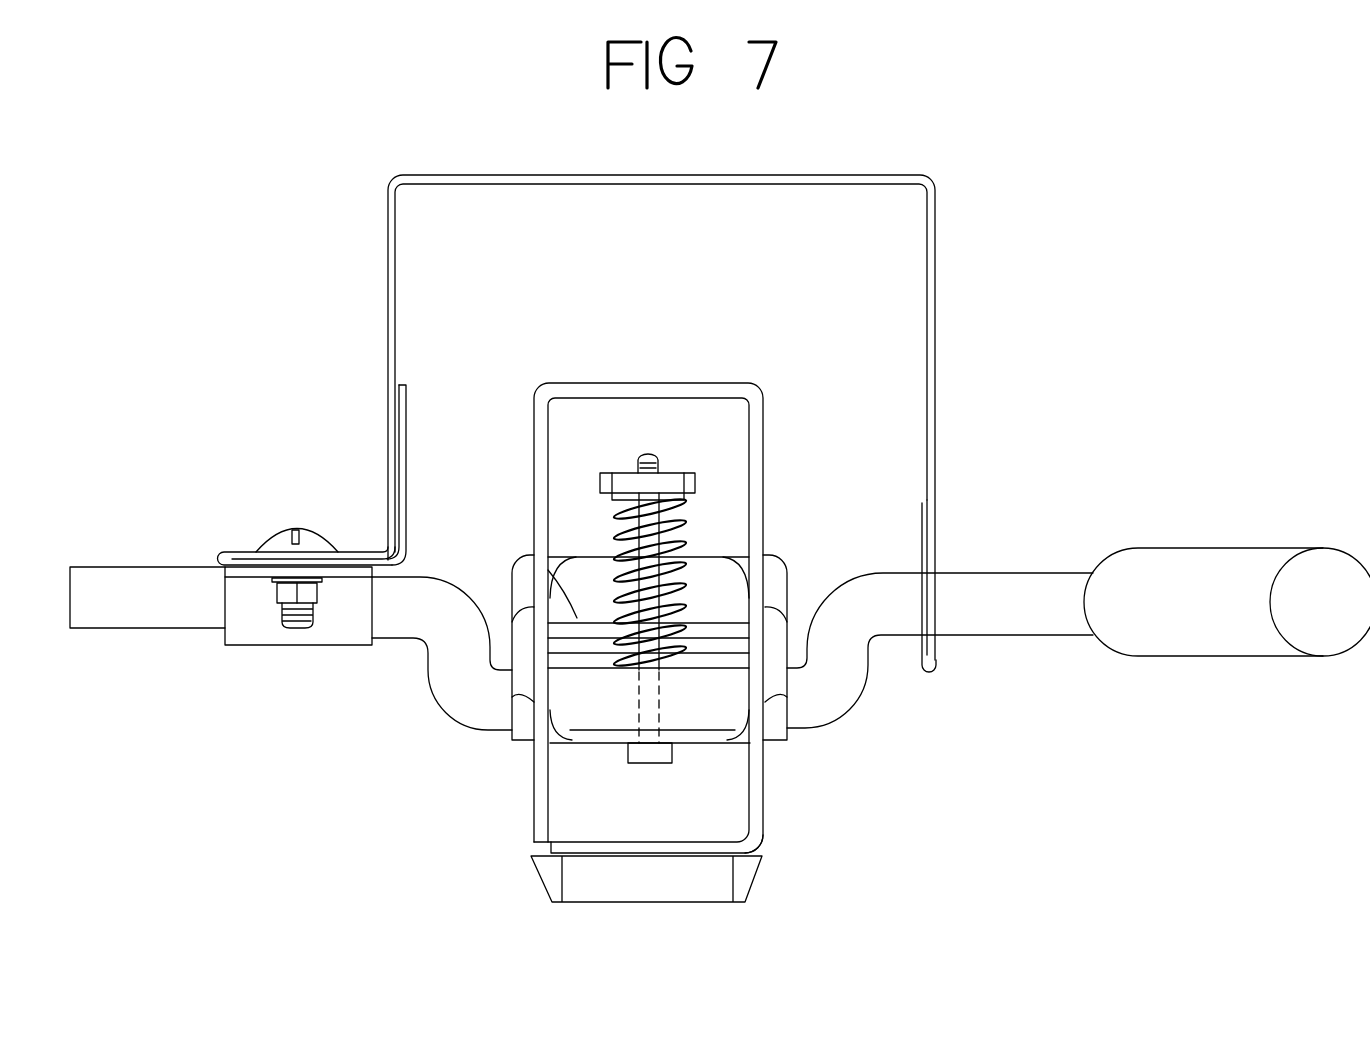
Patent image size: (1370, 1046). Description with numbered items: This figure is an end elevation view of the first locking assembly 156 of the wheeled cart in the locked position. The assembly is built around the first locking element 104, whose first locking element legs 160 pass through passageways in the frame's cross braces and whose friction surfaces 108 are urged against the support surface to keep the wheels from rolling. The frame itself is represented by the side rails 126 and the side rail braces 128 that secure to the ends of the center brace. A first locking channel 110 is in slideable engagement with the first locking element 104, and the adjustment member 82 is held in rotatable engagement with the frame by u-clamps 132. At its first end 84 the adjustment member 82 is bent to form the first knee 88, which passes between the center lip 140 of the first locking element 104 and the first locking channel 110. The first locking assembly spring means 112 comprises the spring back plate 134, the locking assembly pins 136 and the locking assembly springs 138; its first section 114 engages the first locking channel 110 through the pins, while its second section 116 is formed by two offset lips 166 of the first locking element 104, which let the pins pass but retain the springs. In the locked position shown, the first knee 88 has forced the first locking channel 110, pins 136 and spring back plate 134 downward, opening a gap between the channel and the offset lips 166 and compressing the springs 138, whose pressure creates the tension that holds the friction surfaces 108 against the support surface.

The adjustment member 82 is at (1213, 545).
The first end 84 is at (953, 767).
The first knee 88 is at (867, 690).
The first locking element 104 is at (675, 177).
The friction surfaces 108 is at (598, 897).
The first locking channel 110 is at (765, 557).
The first locking assembly spring means 112 is at (632, 318).
The first section of the first locking assembly spring means 114 is at (637, 765).
The second section of the first locking assembly spring means 116 is at (563, 668).
The side rails 126 is at (417, 178).
The side rail braces 128 is at (410, 410).
The u-clamps 132 is at (237, 645).
The spring back plate 134 is at (645, 378).
The locking assembly pins 136 is at (615, 500).
The locking assembly springs 138 is at (690, 518).
The center lip 140 is at (577, 618).
The first locking assembly 156 is at (1200, 215).
The first locking element legs 160 is at (768, 818).
The offset lips 166 is at (675, 673).